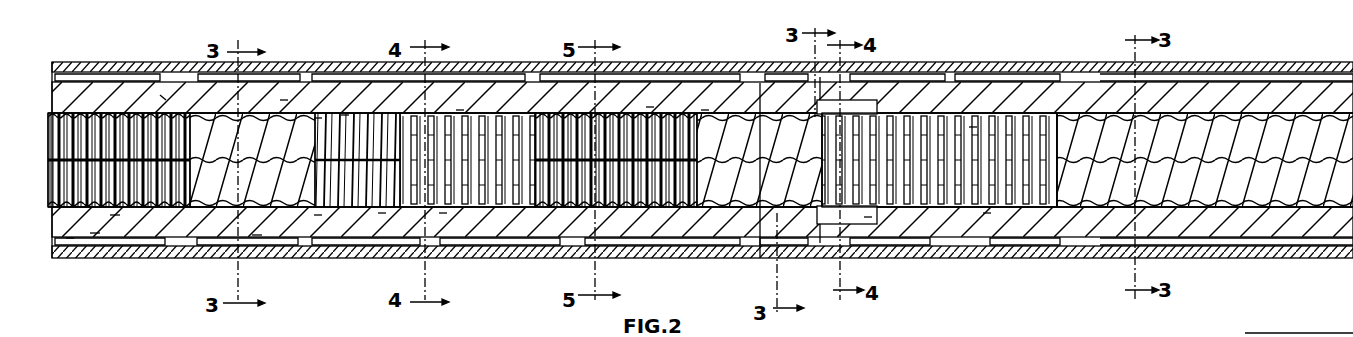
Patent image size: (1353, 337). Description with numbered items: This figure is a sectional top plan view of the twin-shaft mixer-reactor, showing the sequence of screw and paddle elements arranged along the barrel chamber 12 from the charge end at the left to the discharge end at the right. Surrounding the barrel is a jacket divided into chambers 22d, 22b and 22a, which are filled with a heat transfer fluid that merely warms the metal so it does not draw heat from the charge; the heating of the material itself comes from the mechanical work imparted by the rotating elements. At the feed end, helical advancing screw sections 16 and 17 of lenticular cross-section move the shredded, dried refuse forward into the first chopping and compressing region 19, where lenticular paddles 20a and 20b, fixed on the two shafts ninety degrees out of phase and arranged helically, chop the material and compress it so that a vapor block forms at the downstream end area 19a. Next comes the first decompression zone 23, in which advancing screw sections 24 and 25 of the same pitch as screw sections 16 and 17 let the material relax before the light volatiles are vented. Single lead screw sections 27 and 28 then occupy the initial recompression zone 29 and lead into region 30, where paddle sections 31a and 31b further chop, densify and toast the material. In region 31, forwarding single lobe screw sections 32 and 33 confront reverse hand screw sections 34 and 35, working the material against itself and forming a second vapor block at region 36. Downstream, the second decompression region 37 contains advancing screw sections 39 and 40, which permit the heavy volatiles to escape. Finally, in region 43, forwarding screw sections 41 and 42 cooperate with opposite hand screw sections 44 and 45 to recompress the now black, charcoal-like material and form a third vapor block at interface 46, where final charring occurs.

The barrel chamber 12 is at (1252, 237).
The helical advancing screw section 16 is at (1187, 187).
The helical advancing screw section 17 is at (1228, 137).
The first material chopping and compressing region 19 is at (923, 217).
The downstream end area of region 19 19a is at (868, 217).
The lenticular paddle 20a is at (987, 213).
The lenticular paddle 20b is at (973, 127).
The jacket chamber 22a is at (933, 78).
The jacket chamber 22b is at (505, 247).
The jacket chamber 22d is at (125, 80).
The first decompression zone 23 is at (783, 220).
The helical advancing screw section 24 is at (680, 257).
The helical advancing screw section 25 is at (738, 127).
The helical screw section 27 is at (577, 209).
The helical screw section 28 is at (705, 110).
The initial recompression zone 29 is at (650, 107).
The paddle region 30 is at (470, 250).
The screw working region 31 is at (382, 213).
The paddle section 31a is at (443, 213).
The paddle section 31b is at (460, 110).
The single lobe screw section 32 is at (372, 207).
The single lobe screw section 33 is at (345, 115).
The reverse hand screw section 34 is at (310, 115).
The reverse hand screw section 35 is at (318, 215).
The vapor block region 36 is at (318, 118).
The second decompression region 37 is at (213, 210).
The advancing screw section 39 is at (284, 100).
The advancing screw section 40 is at (256, 235).
The forwarding screw section 41 is at (163, 97).
The forwarding screw section 42 is at (115, 217).
The final recompression region 43 is at (95, 233).
The opposite hand screw section 44 is at (67, 113).
The opposite hand screw section 45 is at (70, 240).
The vapor block interface 46 is at (97, 113).